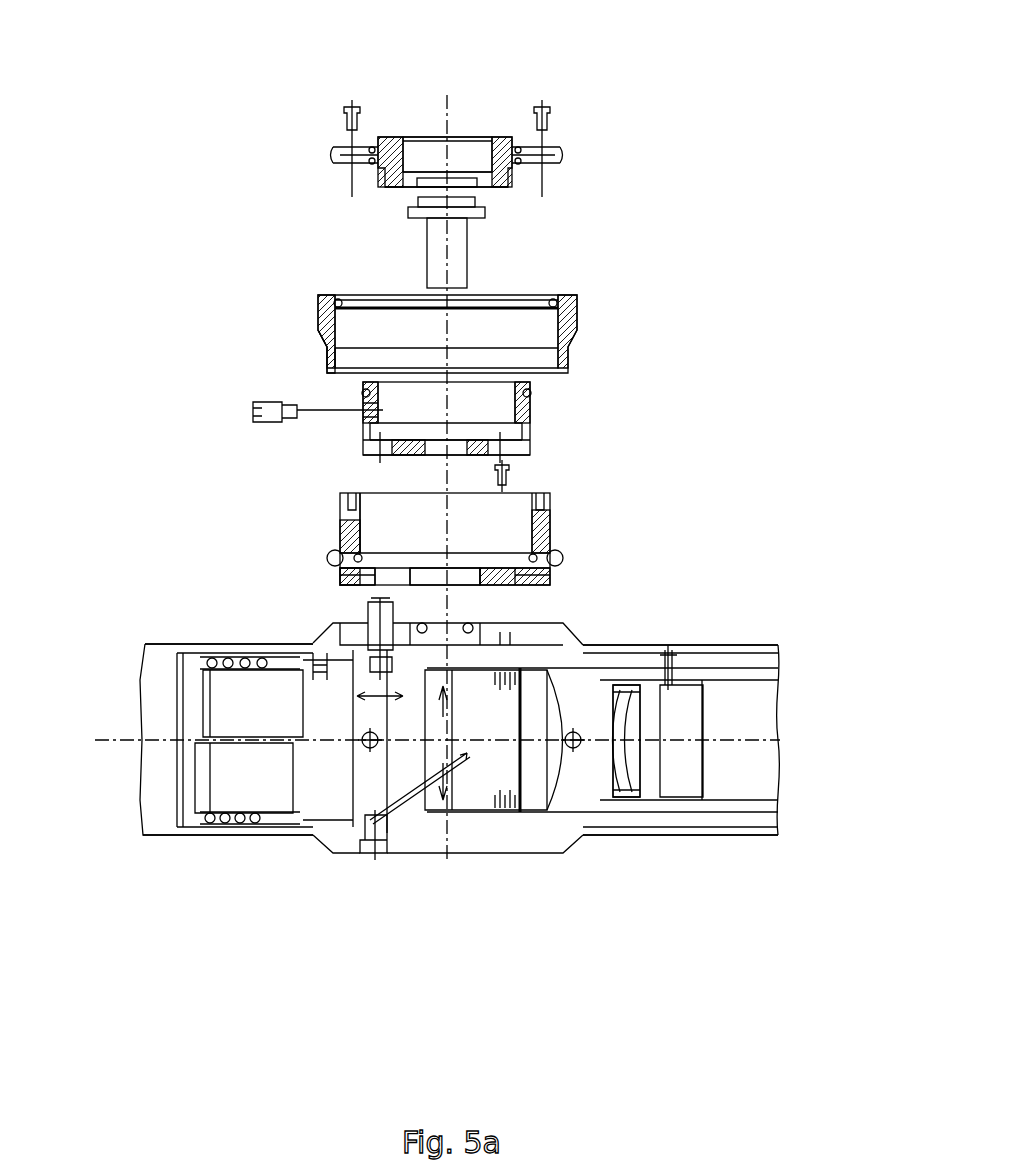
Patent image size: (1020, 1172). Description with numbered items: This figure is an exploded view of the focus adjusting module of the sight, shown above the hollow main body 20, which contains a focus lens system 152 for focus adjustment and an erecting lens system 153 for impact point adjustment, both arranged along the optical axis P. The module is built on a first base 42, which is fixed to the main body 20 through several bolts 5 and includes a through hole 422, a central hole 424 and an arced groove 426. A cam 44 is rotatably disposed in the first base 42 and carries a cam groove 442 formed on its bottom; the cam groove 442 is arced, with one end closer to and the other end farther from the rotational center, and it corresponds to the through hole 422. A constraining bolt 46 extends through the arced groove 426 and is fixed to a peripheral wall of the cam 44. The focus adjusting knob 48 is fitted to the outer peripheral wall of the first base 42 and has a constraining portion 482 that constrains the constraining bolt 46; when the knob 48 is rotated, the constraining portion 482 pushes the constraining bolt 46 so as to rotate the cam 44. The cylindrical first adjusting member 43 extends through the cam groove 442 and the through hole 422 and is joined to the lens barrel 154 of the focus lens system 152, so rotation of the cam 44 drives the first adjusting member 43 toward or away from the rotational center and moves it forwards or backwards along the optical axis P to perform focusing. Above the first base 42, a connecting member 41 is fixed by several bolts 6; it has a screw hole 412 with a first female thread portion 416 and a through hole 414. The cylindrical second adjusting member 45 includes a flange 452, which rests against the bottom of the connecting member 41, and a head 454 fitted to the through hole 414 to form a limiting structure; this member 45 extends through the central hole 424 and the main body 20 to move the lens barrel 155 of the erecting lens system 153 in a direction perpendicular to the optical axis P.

The connecting member 41 is at (385, 186).
The screw hole 412 is at (487, 155).
The first female thread portion 416 is at (407, 152).
The through hole 414 is at (458, 183).
The bolts 6 is at (550, 111).
The head 454 is at (418, 208).
The flange 452 is at (408, 217).
The second adjusting member 45 is at (455, 265).
The focus adjusting knob 48 is at (570, 312).
The constraining portion 482 is at (335, 328).
The constraining bolt 46 is at (267, 402).
The cam 44 is at (530, 400).
The cam groove 442 is at (373, 463).
The bolts 5 is at (510, 470).
The first base 42 is at (552, 535).
The arced groove 426 is at (385, 528).
The through hole 422 is at (368, 598).
The central hole 424 is at (470, 587).
The first adjusting member 43 is at (373, 622).
The lens barrel 154 is at (210, 656).
The main body 20 is at (673, 648).
The lens barrel 155 is at (478, 810).
The focus lens system 152 is at (390, 833).
The erecting lens system 153 is at (765, 835).
The optical axis P is at (421, 477).